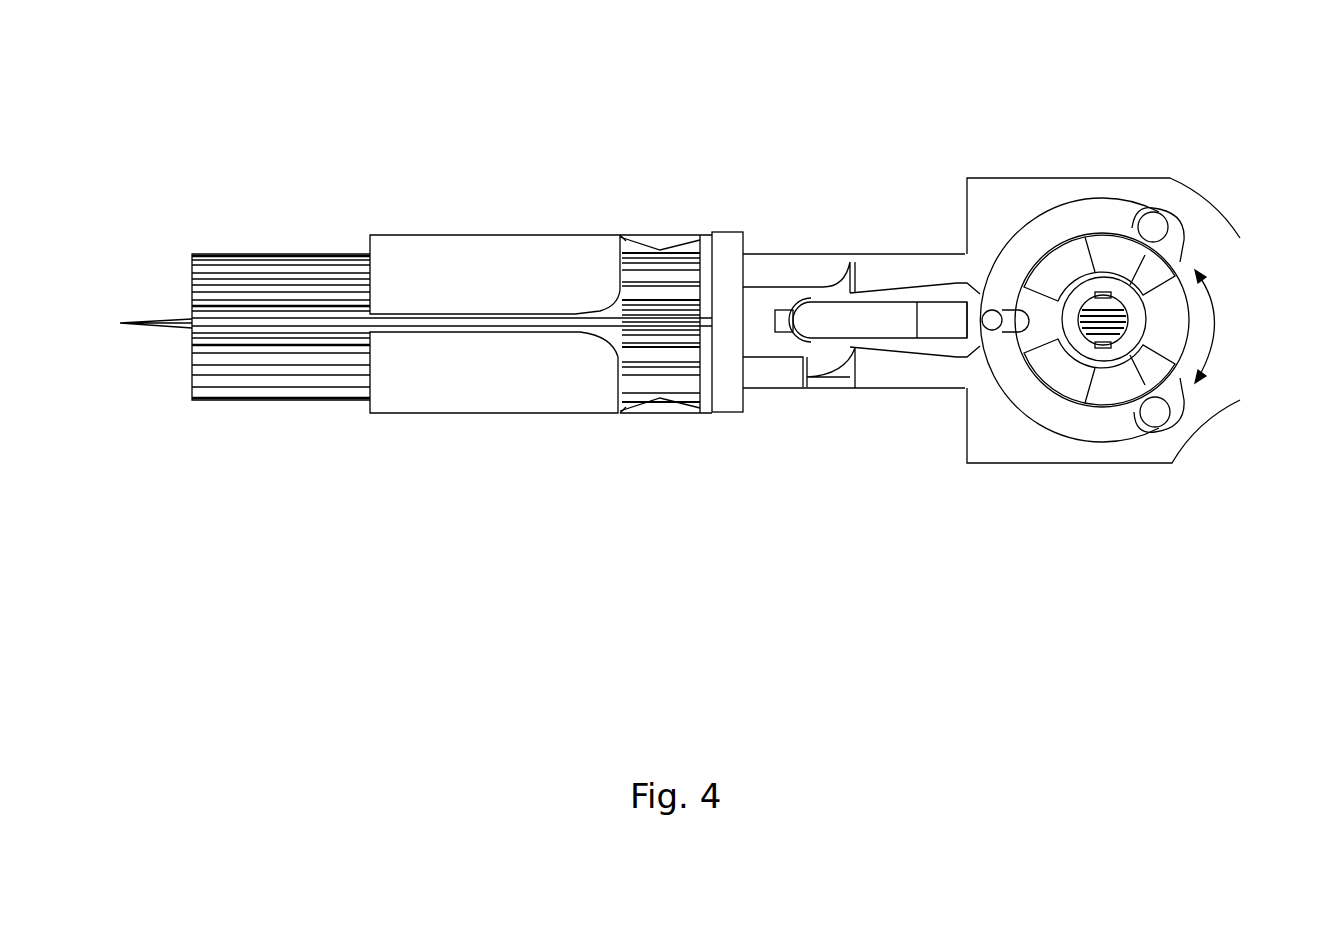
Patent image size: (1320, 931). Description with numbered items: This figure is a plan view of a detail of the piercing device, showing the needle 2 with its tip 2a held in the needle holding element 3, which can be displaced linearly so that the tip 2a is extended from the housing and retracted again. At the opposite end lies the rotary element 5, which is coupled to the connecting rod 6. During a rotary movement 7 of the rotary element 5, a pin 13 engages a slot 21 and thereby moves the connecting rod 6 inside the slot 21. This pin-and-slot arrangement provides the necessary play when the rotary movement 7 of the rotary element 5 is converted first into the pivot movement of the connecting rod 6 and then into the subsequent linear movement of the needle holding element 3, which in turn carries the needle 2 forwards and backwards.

The tip 2a is at (155, 312).
The needle 2 is at (278, 280).
The needle holding element 3 is at (492, 272).
The rotary element 5 is at (1083, 215).
The connecting rod 6 is at (865, 320).
The rotary movement 7 is at (1240, 400).
The pin 13 is at (992, 332).
The slot 21 is at (1018, 334).